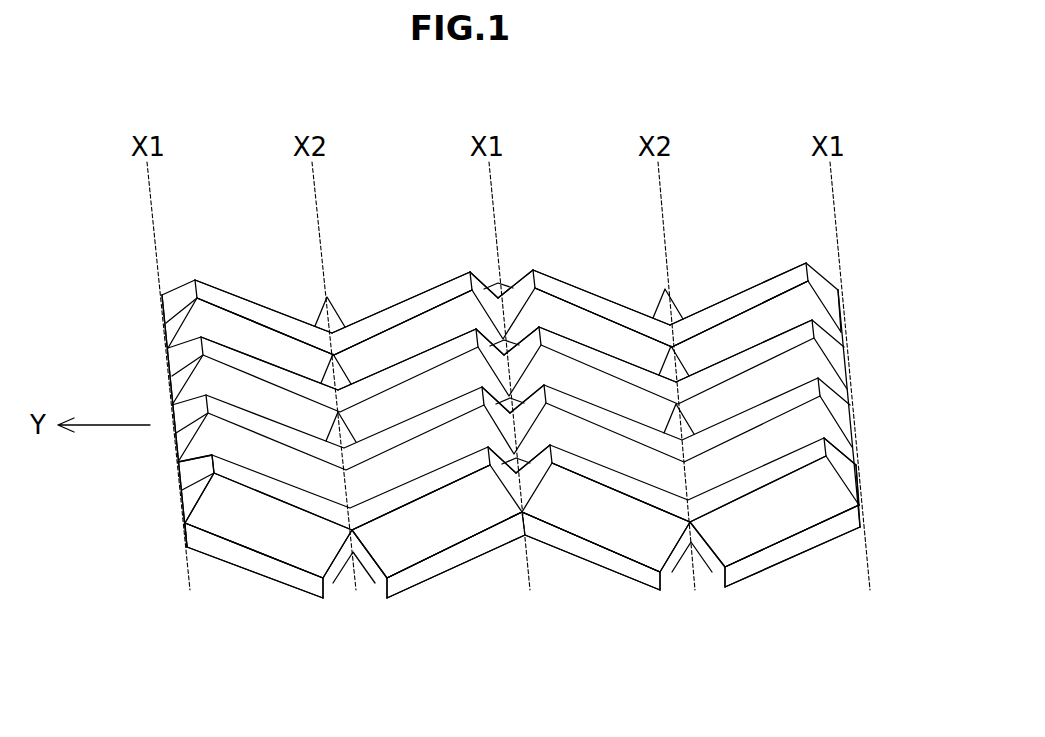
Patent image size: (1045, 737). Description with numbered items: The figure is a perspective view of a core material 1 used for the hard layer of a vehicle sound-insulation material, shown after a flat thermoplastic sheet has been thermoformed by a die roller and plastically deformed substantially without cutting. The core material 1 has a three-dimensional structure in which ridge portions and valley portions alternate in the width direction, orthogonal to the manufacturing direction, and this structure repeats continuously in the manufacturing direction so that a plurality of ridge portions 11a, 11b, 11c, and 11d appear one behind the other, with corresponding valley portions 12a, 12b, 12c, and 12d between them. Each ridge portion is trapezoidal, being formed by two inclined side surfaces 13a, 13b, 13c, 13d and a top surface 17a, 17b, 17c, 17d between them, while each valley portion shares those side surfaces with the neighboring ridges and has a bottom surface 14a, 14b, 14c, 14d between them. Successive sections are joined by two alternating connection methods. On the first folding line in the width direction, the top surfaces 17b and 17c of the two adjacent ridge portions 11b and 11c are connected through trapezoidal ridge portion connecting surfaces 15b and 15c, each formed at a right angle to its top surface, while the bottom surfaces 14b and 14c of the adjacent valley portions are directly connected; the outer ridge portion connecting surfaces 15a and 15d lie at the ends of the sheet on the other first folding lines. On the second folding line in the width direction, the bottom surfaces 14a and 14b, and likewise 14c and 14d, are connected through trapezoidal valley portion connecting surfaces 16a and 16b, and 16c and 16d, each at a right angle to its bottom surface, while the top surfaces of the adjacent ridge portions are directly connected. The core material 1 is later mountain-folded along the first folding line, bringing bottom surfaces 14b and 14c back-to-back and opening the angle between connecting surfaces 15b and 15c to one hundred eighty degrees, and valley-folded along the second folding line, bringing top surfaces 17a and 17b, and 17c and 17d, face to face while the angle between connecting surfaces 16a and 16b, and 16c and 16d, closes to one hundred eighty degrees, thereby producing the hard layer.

The core material 1 is at (715, 184).
The ridge portion 11a is at (157, 327).
The ridge portion 11b is at (437, 542).
The ridge portion 11c is at (635, 544).
The ridge portion 11d is at (853, 301).
The valley portion 12a is at (180, 350).
The valley portion 12b is at (381, 345).
The valley portion 12c is at (580, 315).
The valley portion 12d is at (768, 321).
The side surface 13a is at (222, 525).
The side surface 13b is at (475, 518).
The side surface 13c is at (585, 520).
The side surface 13d is at (802, 510).
The bottom surface 14a is at (277, 567).
The bottom surface 14b is at (425, 575).
The bottom surface 14c is at (633, 562).
The bottom surface 14d is at (762, 557).
The ridge portion connecting surface 15a is at (190, 500).
The ridge portion connecting surface 15b is at (485, 280).
The ridge portion connecting surface 15c is at (508, 280).
The ridge portion connecting surface 15d is at (858, 463).
The valley portion connecting surface 16a is at (332, 583).
The valley portion connecting surface 16b is at (370, 583).
The valley portion connecting surface 16c is at (678, 570).
The valley portion connecting surface 16d is at (722, 572).
The top surface 17a is at (252, 303).
The top surface 17b is at (387, 307).
The top surface 17c is at (598, 293).
The top surface 17d is at (733, 297).